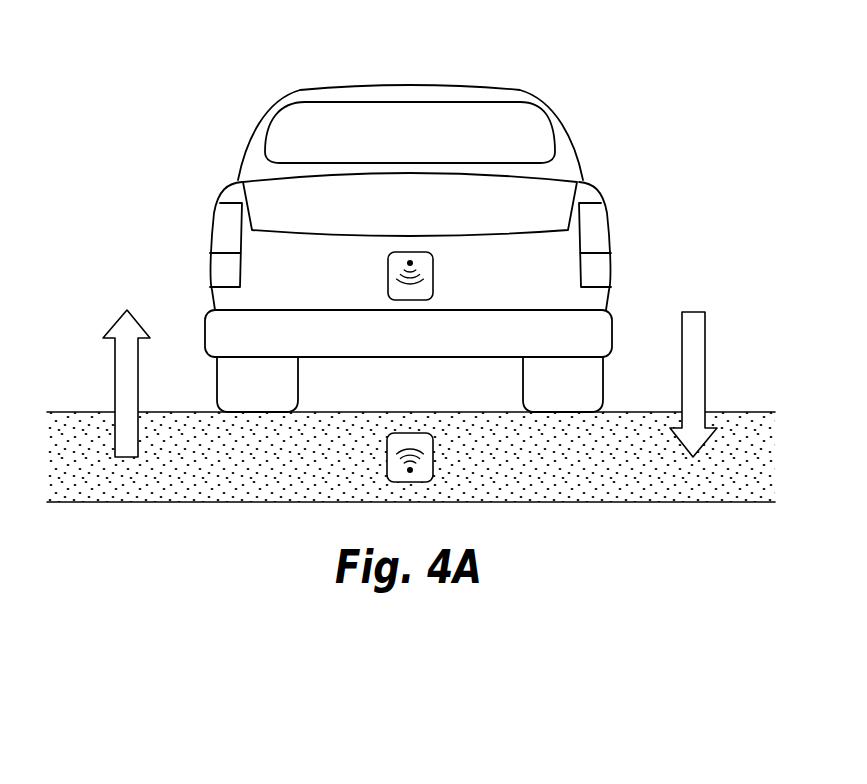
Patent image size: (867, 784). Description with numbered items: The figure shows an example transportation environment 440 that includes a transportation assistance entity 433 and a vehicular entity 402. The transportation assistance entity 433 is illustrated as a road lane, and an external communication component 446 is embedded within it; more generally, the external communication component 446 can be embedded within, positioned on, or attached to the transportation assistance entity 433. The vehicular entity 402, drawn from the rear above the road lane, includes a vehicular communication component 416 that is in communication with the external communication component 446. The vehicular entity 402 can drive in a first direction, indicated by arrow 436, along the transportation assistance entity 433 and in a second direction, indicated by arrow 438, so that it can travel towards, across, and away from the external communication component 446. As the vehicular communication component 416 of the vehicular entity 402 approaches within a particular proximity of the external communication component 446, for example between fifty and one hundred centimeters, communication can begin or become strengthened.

The transportation environment 440 is at (153, 52).
The vehicular entity 402 is at (480, 93).
The vehicular communication component 416 is at (426, 270).
The arrow 436 is at (127, 384).
The arrow 438 is at (692, 385).
The transportation assistance entity 433 is at (200, 483).
The external communication component 446 is at (420, 462).